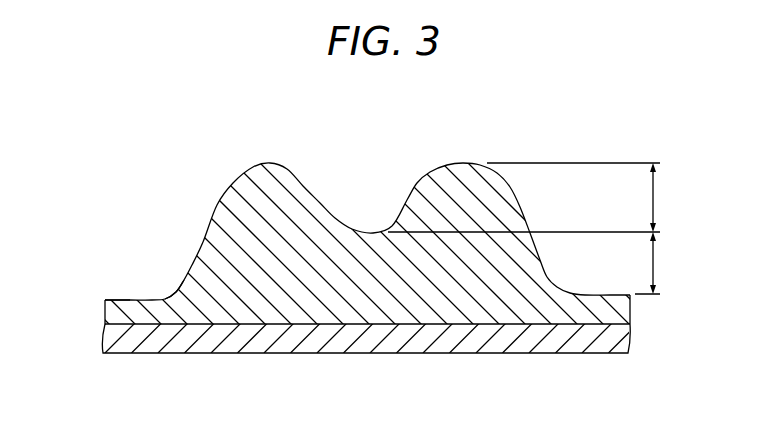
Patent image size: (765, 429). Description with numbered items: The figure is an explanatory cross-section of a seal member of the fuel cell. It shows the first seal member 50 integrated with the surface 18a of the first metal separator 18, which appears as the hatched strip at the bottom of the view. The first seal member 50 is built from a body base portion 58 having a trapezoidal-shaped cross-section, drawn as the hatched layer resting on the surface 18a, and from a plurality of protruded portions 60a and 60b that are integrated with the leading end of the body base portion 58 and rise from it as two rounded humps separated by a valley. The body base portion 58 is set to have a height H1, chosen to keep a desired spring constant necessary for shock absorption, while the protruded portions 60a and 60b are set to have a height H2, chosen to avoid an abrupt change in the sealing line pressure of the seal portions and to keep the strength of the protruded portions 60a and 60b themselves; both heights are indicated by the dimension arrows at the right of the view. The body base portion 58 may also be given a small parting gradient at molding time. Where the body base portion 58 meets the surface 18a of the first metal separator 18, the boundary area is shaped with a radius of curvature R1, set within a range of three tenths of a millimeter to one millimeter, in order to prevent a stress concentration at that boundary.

The first seal member 50 is at (553, 140).
The body base portion 58 is at (447, 280).
The protruded portion 60a is at (264, 192).
The protruded portion 60b is at (456, 192).
The radius of curvature R1 is at (174, 291).
The first metal separator 18 is at (238, 342).
The surface 18a is at (132, 321).
The height H2 is at (538, 197).
The height H1 is at (662, 263).